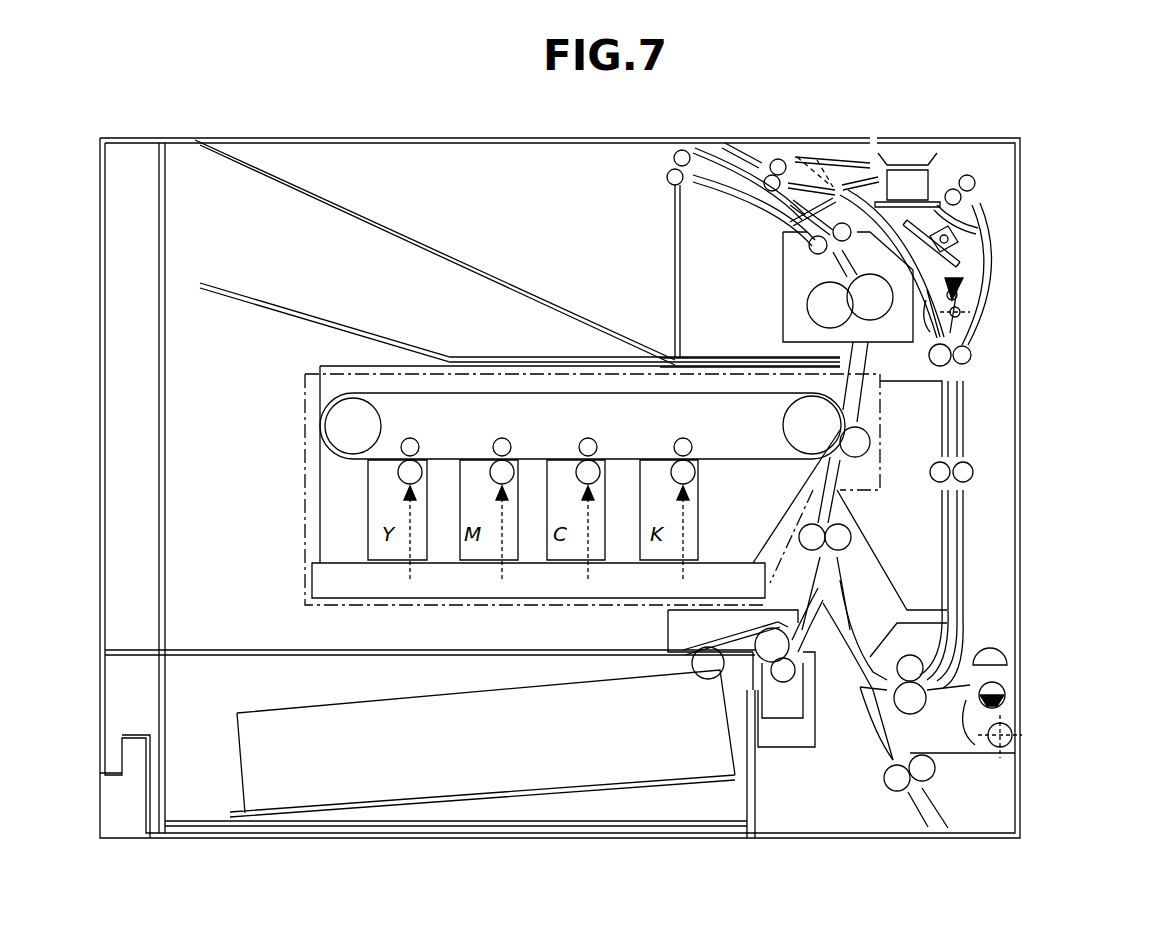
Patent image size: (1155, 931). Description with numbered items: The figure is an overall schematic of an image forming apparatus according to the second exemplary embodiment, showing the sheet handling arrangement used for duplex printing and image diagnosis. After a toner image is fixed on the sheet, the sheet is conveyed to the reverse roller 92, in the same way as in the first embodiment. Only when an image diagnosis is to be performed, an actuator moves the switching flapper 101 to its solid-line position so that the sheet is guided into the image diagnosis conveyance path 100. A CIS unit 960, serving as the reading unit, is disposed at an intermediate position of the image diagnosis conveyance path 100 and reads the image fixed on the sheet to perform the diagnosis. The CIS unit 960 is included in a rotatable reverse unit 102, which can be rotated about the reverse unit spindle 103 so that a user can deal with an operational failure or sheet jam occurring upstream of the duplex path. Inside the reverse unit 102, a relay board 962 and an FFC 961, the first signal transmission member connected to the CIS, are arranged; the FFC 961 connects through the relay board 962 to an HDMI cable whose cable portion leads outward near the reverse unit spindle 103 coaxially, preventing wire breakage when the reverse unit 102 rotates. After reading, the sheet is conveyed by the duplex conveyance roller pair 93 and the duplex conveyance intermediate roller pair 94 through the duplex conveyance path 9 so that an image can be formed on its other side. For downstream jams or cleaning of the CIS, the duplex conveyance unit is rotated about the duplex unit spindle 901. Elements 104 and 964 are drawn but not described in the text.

The reverse roller 92 is at (778, 160).
The switching flapper 101 is at (817, 173).
The image diagnosis conveyance path 100 is at (857, 170).
The CIS unit 960 is at (910, 183).
The discharge roller 104 is at (975, 183).
The reverse unit 102 is at (962, 200).
The FFC 961 is at (987, 223).
The relay board 962 is at (972, 250).
The switching flap 964 is at (975, 287).
The reverse unit spindle 103 is at (987, 306).
The duplex conveyance roller pair 93 is at (962, 352).
The duplex conveyance path 9 is at (952, 418).
The duplex conveyance intermediate roller pair 94 is at (965, 473).
The duplex unit spindle 901 is at (1005, 735).